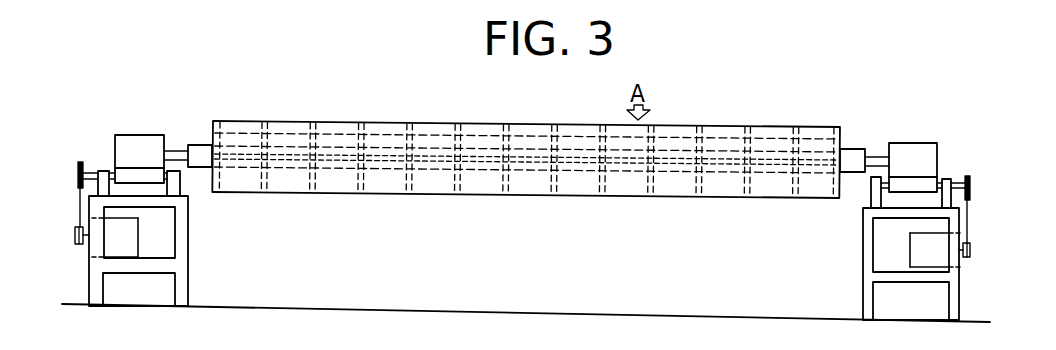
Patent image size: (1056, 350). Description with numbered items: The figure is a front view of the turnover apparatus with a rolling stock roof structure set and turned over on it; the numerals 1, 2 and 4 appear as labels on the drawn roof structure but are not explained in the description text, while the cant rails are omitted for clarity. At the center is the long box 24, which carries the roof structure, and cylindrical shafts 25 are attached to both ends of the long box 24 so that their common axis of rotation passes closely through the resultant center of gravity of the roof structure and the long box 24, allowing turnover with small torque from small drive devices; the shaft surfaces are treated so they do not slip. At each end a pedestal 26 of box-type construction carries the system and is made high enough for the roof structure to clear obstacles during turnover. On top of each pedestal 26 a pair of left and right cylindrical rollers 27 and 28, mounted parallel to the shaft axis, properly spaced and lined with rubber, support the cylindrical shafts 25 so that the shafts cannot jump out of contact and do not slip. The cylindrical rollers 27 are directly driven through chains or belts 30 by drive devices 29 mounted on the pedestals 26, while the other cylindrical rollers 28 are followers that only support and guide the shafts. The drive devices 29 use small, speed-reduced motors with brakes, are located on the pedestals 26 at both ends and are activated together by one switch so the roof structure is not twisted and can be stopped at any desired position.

The roll (wound web roll) 1 is at (526, 154).
The core shaft 2 is at (438, 170).
The roll body / wound sheet 4 is at (548, 123).
The long box 24 is at (202, 152).
The cylindrical shafts 25 is at (143, 142).
The pedestals 26 is at (188, 273).
The cylindrical rollers 27 is at (535, 147).
The cylindrical rollers 28 is at (123, 175).
The drive devices 29 is at (112, 240).
The chains or belts 30 is at (80, 207).